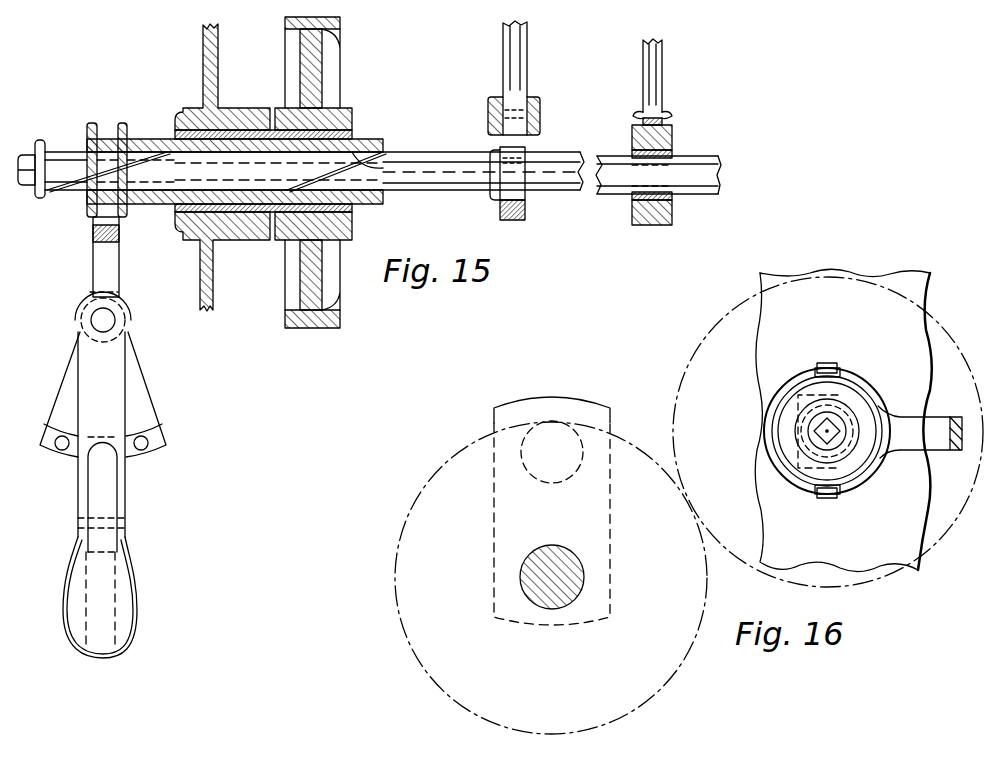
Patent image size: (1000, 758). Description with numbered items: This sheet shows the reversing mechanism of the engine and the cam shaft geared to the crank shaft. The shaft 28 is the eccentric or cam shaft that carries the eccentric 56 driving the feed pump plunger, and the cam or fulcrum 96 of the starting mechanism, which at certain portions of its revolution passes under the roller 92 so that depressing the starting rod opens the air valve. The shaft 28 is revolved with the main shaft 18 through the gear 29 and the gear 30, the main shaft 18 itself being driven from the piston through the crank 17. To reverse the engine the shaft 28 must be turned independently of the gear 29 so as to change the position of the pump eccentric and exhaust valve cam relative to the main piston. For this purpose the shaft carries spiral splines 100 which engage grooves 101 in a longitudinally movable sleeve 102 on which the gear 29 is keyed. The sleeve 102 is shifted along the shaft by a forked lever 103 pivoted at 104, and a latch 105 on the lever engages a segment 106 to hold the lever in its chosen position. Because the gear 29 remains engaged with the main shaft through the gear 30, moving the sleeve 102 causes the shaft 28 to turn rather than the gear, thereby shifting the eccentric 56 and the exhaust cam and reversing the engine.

In FIG. 15, the crank 17 is at (508, 468).
In FIG. 15, the main shaft 18 is at (548, 573).
In FIG. 15, the shaft 28 is at (555, 170).
In FIG. 15, the gear 29 is at (297, 294).
In FIG. 16, the gear 29 is at (700, 354).
In FIG. 15, the gear 30 is at (647, 695).
In FIG. 15, the eccentric 56 is at (672, 210).
In FIG. 15, the roller 92 is at (512, 108).
In FIG. 15, the cam or fulcrum 96 is at (526, 207).
In FIG. 15, the spiral splines 100 is at (362, 172).
In FIG. 15, the grooves 101 is at (381, 150).
In FIG. 15, the sleeve 102 is at (371, 198).
In FIG. 15, the forked lever 103 is at (103, 251).
In FIG. 15, the pivot 104 is at (100, 320).
In FIG. 15, the latch 105 is at (103, 507).
In FIG. 15, the segment 106 is at (150, 442).